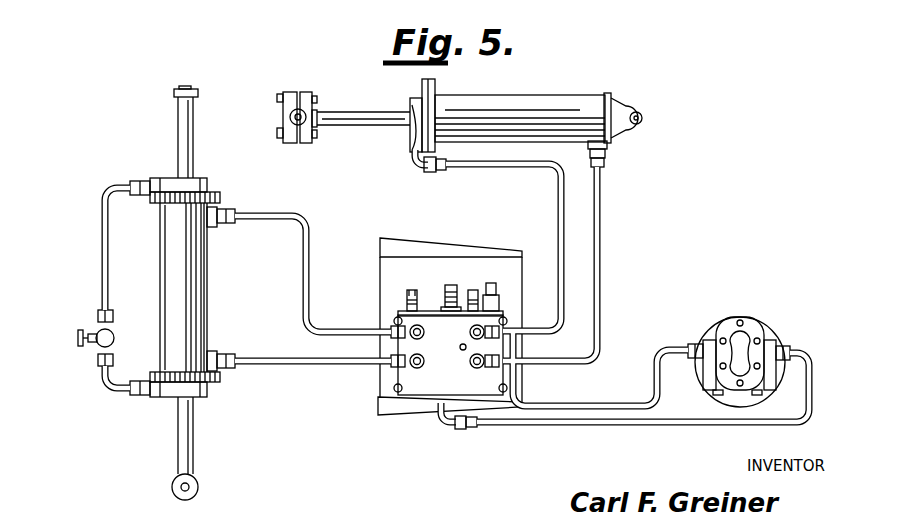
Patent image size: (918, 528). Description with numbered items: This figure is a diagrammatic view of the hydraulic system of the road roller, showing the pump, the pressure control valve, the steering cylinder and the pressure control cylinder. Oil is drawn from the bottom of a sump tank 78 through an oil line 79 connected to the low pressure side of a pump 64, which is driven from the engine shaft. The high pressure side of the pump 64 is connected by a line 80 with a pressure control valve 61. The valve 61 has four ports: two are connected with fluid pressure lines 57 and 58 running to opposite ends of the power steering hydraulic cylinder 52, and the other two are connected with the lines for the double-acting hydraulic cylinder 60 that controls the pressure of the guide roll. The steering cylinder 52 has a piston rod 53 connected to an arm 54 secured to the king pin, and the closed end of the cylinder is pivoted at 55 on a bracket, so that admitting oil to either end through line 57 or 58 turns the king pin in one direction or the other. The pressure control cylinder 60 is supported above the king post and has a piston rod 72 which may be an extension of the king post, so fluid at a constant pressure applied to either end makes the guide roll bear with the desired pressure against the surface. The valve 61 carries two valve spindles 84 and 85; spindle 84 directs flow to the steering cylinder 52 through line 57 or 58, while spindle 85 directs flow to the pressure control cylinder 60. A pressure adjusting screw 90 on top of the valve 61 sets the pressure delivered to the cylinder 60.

The hydraulic cylinder 52 is at (565, 95).
The piston rod 53 is at (352, 112).
The arm 54 is at (293, 114).
The pivot 55 is at (642, 112).
The fluid pressure line 57 is at (603, 212).
The fluid pressure line 58 is at (558, 201).
The double-acting hydraulic cylinder 60 is at (205, 250).
The pressure control valve 61 is at (430, 385).
The pump 64 is at (754, 322).
The piston rod 72 is at (193, 427).
The sump tank 78 is at (418, 268).
The oil line 79 is at (572, 427).
The line 80 is at (602, 402).
The valve spindle 84 is at (471, 294).
The valve spindle 85 is at (410, 290).
The pressure adjusting screw 90 is at (447, 298).